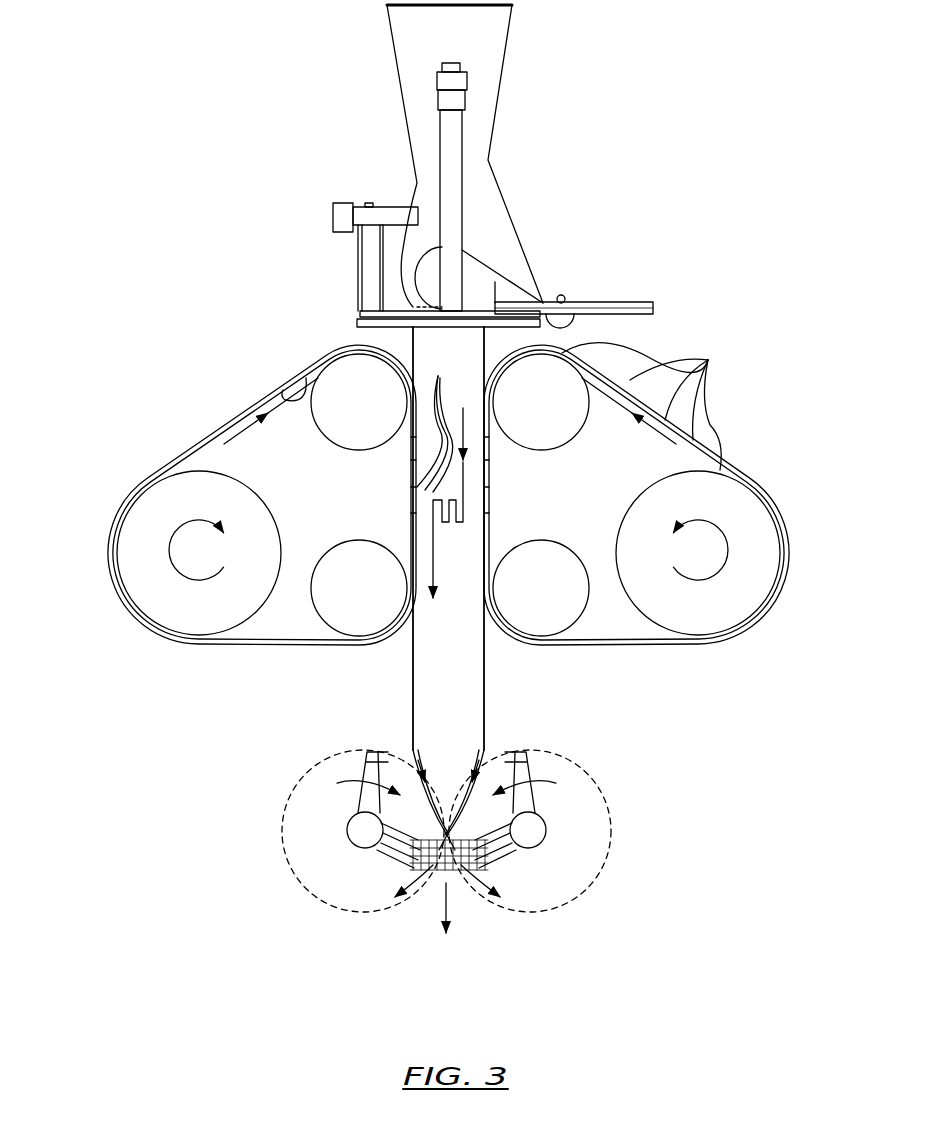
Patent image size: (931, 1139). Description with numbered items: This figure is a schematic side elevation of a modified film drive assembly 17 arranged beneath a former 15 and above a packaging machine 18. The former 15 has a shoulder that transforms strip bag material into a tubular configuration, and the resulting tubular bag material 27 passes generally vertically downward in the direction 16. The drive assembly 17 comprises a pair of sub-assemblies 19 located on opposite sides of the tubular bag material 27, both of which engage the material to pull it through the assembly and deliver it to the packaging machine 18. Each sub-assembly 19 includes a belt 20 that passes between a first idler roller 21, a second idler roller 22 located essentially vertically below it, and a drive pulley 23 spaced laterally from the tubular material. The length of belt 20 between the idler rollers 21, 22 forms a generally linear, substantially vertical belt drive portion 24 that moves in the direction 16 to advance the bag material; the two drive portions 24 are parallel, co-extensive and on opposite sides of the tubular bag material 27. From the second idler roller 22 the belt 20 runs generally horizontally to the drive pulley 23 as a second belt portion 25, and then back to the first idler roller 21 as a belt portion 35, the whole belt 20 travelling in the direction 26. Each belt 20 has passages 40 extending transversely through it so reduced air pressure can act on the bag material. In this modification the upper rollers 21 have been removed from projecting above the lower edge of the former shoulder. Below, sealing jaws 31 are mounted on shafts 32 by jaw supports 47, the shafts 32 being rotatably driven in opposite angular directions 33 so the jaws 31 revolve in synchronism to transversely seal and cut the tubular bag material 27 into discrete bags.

The former 15 is at (500, 166).
The direction 16 is at (443, 887).
The film drive assembly 17 is at (768, 142).
The packaging machine 18 is at (494, 850).
The sub-assembly 19 is at (444, 495).
The belt 20 is at (121, 509).
The first idler roller 21 is at (376, 419).
The second idler roller 22 is at (376, 605).
The drive pulley 23 is at (239, 617).
The belt drive portion 24 is at (412, 527).
The second belt portion 25 is at (255, 650).
The direction 26 is at (250, 433).
The tubular bag material 27 is at (407, 655).
The sealing jaw 31 is at (373, 762).
The shaft 32 is at (347, 832).
The angular direction 33 is at (413, 878).
The belt portion 35 is at (306, 375).
The passage 40 is at (578, 462).
The jaw support 47 is at (358, 802).